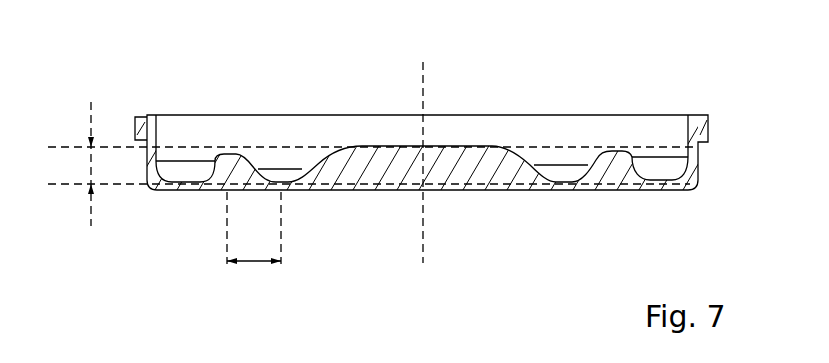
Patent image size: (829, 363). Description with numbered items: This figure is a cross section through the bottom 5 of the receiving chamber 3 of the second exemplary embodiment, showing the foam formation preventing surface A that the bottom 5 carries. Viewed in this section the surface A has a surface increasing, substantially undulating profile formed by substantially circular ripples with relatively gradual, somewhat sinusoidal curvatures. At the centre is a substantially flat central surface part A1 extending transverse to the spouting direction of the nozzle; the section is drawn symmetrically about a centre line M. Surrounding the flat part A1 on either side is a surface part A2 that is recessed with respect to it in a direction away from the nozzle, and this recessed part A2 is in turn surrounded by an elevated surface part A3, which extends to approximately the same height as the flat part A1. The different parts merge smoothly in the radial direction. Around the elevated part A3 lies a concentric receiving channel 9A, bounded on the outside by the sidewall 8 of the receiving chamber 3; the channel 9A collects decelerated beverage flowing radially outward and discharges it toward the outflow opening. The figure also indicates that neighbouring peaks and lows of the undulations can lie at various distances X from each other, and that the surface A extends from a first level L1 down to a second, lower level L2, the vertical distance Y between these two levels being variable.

The receiving chamber 3 is at (570, 100).
The bottom 5 is at (344, 172).
The sidewall 8 is at (698, 148).
The receiving channel 9A is at (660, 240).
The foam formation preventing surface A is at (364, 145).
The flat central surface part A1 is at (457, 146).
The recessed surface part A2 is at (564, 240).
The elevated surface part A3 is at (617, 151).
The first level L1 is at (62, 147).
The second level L2 is at (62, 184).
The distance between neighbouring peaks and lows X is at (254, 228).
The vertical distance Y is at (90, 164).
The center line M is at (425, 248).